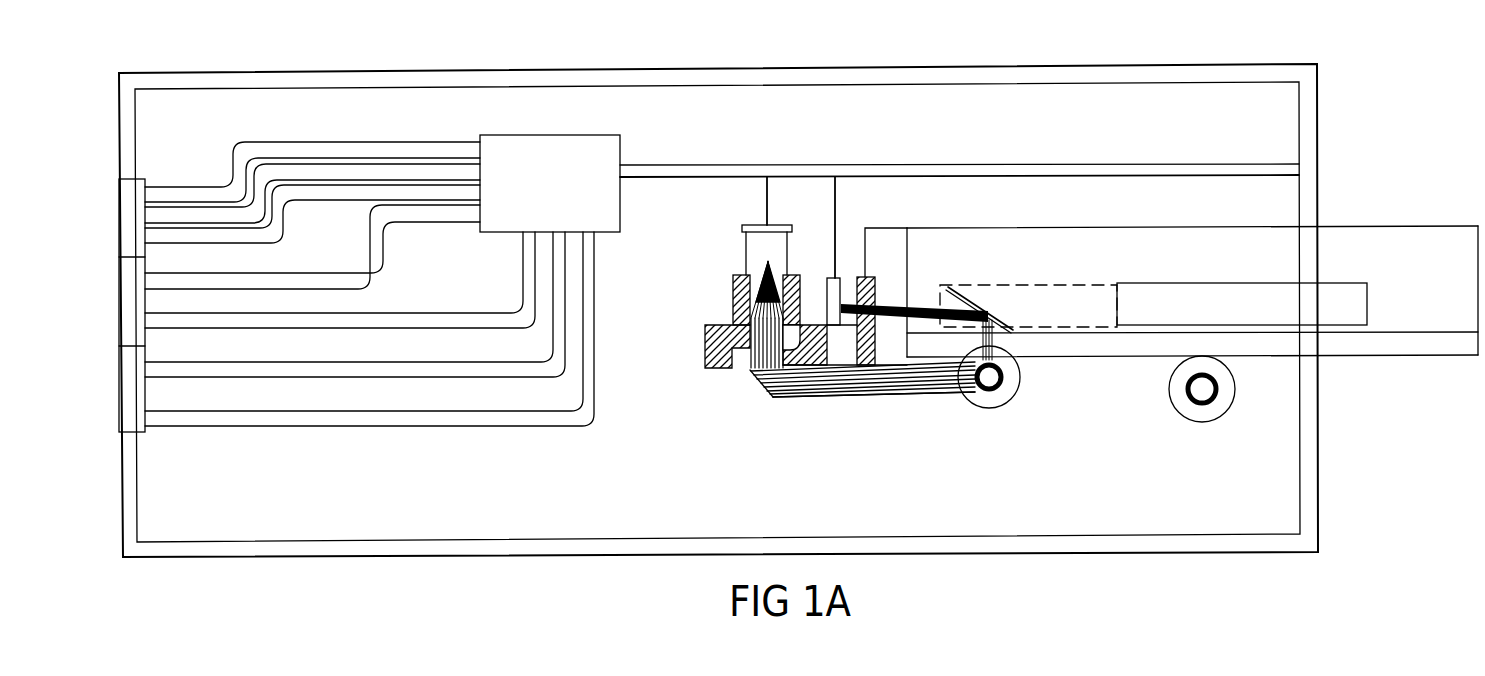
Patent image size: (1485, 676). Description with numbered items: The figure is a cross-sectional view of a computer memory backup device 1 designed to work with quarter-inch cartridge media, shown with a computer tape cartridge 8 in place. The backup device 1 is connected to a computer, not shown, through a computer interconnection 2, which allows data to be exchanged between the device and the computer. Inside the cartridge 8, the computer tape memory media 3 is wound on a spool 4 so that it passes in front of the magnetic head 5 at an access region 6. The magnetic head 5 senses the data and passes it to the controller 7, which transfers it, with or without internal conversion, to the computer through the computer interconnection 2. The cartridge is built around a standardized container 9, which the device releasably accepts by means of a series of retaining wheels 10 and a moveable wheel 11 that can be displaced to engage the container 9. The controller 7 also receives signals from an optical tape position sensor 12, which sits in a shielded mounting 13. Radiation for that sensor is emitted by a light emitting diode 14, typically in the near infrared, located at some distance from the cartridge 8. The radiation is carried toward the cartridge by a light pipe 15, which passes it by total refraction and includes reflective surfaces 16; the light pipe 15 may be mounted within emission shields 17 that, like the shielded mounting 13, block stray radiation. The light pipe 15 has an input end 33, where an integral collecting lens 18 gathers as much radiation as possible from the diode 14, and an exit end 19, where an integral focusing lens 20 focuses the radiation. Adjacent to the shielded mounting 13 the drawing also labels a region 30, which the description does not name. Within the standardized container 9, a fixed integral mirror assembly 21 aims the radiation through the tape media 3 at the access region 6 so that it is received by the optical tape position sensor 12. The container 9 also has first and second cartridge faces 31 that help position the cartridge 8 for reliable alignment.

The computer memory backup device 1 is at (898, 67).
The computer interconnection 2 is at (119, 412).
The computer tape memory media 3 is at (1068, 298).
The spool 4 is at (1358, 308).
The magnetic head 5 is at (883, 238).
The access region 6 is at (940, 318).
The controller 7 is at (624, 135).
The computer tape cartridge 8 is at (1372, 226).
The standardized container 9 is at (1193, 238).
The retaining wheels 10 is at (1192, 415).
The moveable wheel 11 is at (973, 407).
The optical tape position sensor 12 is at (827, 287).
The shielded mounting 13 is at (860, 280).
The light emitting diode 14 is at (747, 250).
The light pipe 15 is at (808, 398).
The reflective surfaces 16 is at (760, 371).
The emission shields 17 is at (735, 284).
The integral collecting lens 18 is at (705, 343).
The exit end 19 is at (945, 393).
The integral focusing lens 20 is at (1003, 350).
The integral mirror assembly 21 is at (990, 303).
The chamber 30 is at (904, 288).
The first and second cartridge faces 31 is at (1458, 226).
The input end 33 is at (747, 362).